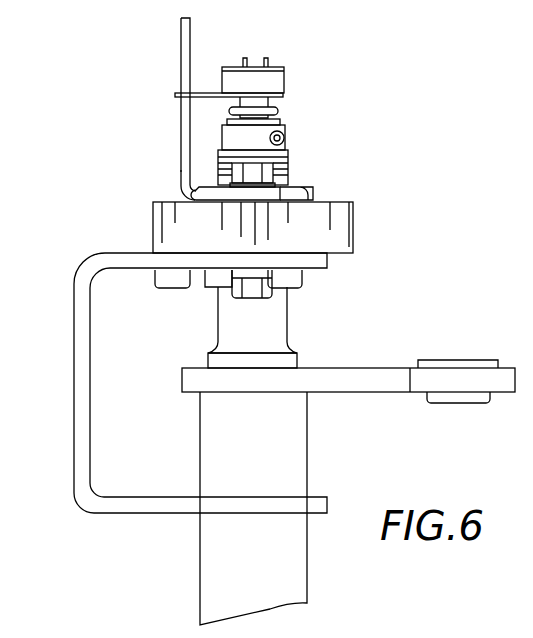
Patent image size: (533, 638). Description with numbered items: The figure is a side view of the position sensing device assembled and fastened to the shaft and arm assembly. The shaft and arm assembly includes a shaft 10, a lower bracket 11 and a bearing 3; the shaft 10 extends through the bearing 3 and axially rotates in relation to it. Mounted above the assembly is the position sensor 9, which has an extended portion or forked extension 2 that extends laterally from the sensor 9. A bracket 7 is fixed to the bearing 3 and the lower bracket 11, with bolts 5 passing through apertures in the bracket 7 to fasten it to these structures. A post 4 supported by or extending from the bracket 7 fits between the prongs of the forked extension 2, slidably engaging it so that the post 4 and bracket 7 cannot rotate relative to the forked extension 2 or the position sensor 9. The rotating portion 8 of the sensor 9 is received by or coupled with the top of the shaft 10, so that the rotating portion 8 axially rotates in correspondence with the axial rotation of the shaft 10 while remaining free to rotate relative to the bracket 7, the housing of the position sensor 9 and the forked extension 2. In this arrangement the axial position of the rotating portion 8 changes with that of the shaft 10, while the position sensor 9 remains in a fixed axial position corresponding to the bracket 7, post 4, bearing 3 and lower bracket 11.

The extended portion (forked extension) 2 is at (204, 92).
The bearing 3 is at (354, 215).
The post 4 is at (181, 53).
The bolts 5 is at (268, 172).
The bracket 7 is at (180, 175).
The rotating portion 8 is at (285, 131).
The position sensor 9 is at (284, 80).
The shaft 10 is at (307, 440).
The lower bracket 11 is at (74, 305).